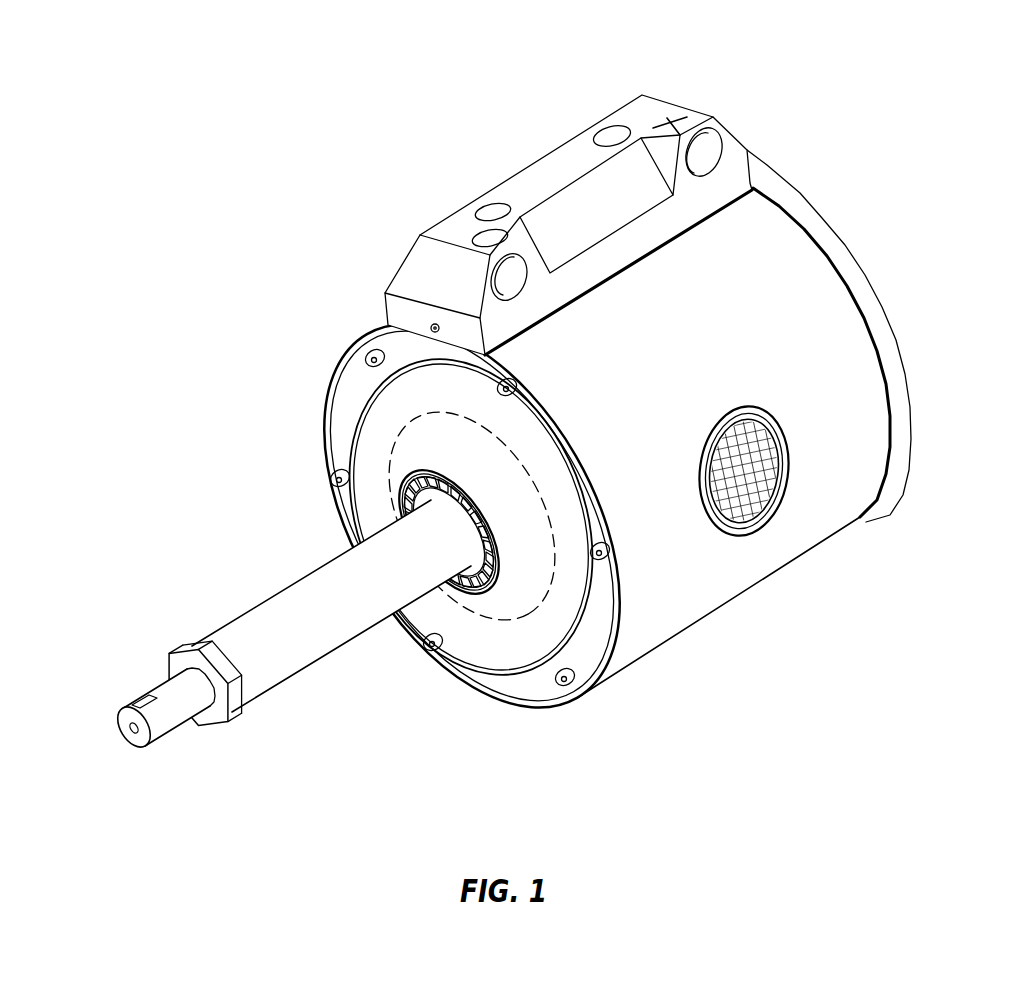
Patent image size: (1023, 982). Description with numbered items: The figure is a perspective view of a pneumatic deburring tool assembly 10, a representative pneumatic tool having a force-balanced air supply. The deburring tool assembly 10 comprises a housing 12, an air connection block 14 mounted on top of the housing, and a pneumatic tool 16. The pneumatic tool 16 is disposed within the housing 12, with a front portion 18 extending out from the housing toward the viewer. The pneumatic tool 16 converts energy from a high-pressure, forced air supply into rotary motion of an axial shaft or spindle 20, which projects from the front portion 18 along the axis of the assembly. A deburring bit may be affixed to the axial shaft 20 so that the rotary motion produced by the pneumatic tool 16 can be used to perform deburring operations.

The deburring tool assembly 10 is at (545, 419).
The housing 12 is at (782, 287).
The air connection block 14 is at (656, 98).
The pneumatic tool 16 is at (291, 641).
The front portion 18 is at (297, 607).
The axial shaft 20 is at (172, 734).